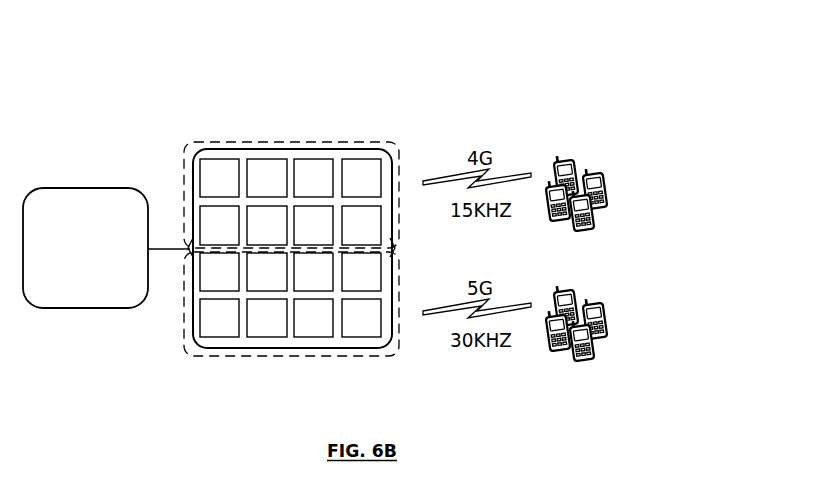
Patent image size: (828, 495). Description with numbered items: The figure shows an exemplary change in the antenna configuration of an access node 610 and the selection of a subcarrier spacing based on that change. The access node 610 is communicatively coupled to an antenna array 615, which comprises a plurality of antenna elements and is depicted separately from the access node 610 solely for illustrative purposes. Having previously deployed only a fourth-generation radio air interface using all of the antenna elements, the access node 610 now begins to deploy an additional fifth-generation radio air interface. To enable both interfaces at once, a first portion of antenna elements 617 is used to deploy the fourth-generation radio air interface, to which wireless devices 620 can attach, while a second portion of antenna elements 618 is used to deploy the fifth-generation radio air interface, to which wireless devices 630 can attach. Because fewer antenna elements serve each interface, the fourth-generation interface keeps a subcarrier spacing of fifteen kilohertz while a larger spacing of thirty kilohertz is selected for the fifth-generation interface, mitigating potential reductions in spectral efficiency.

The access node 610 is at (103, 258).
The antenna array 615 is at (293, 151).
The first portion of antenna elements 617 is at (192, 149).
The second portion of antenna elements 618 is at (192, 349).
The wireless devices 620 is at (630, 170).
The wireless devices 630 is at (630, 297).